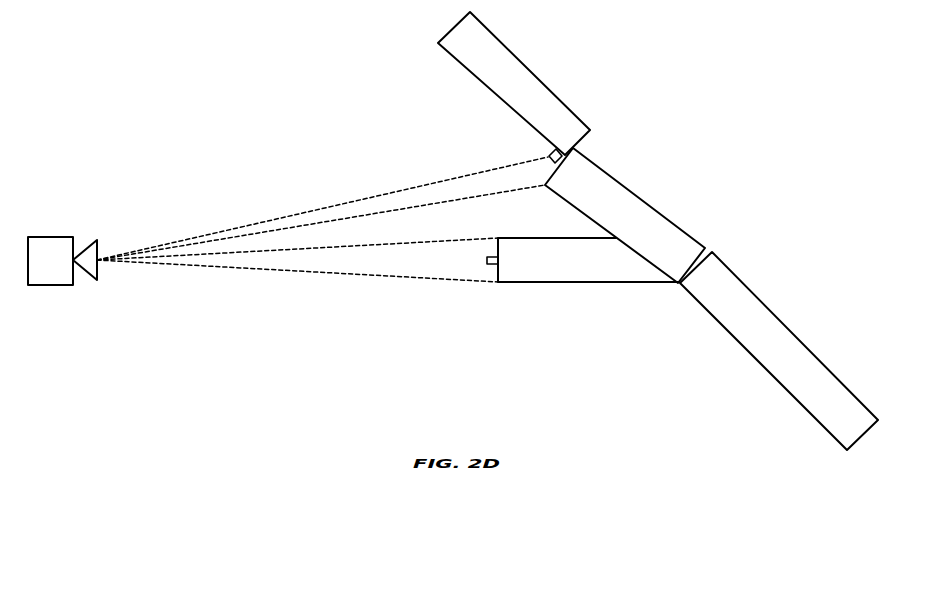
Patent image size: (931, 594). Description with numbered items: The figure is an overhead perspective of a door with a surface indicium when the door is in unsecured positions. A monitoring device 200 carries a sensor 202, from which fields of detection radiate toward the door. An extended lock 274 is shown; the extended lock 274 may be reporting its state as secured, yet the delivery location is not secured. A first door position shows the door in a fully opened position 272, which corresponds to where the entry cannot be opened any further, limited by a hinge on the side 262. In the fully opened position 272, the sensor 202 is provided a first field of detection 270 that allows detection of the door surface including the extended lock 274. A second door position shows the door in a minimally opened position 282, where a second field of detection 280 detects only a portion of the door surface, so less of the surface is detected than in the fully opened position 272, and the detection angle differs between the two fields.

The monitoring device 200 is at (64, 219).
The sensor 202 is at (92, 278).
The side 262 is at (700, 266).
The first field of detection 270 is at (405, 280).
The fully opened position 272 is at (557, 285).
The extended lock 274 is at (487, 263).
The second field of detection 280 is at (347, 196).
The minimally opened position 282 is at (642, 200).